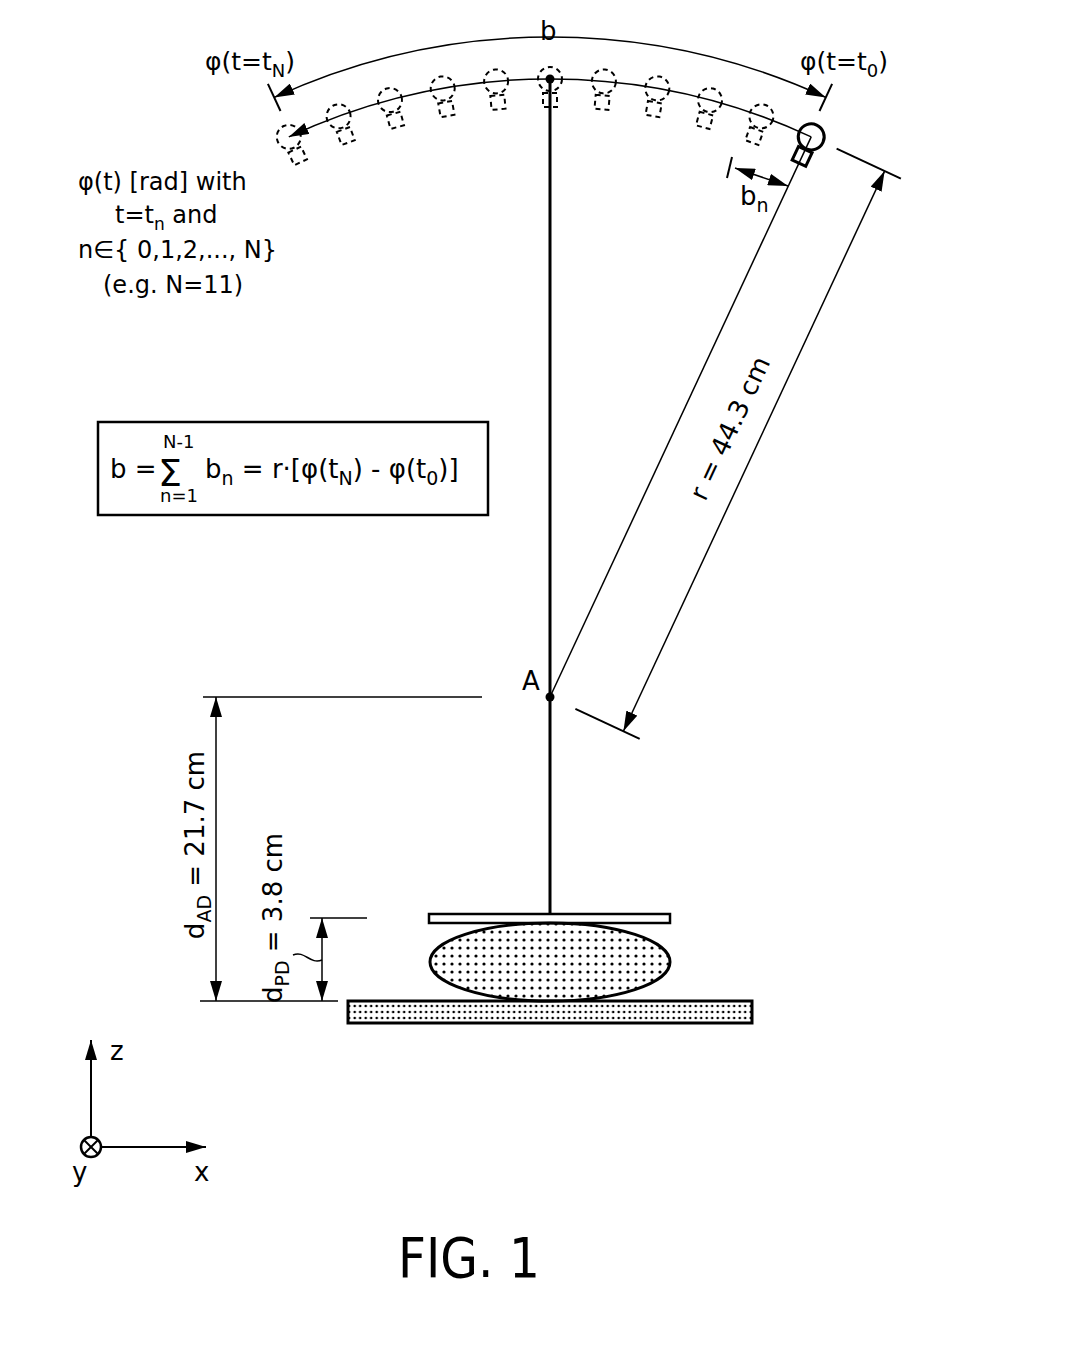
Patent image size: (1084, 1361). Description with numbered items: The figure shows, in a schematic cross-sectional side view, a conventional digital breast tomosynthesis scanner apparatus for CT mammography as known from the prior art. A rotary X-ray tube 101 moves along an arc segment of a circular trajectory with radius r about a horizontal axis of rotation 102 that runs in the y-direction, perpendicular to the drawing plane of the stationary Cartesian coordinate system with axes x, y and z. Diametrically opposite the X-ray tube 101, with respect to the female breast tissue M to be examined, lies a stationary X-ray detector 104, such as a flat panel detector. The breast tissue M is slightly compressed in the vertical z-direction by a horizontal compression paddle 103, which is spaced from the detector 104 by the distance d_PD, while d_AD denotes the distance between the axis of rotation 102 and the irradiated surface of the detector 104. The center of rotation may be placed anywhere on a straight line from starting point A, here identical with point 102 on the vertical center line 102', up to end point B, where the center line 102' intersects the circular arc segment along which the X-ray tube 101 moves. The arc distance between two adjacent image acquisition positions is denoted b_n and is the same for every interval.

The rotary X-ray tube 101 is at (825, 134).
The horizontal axis of rotation 102 is at (525, 730).
The center line 102' is at (597, 496).
The horizontal compression paddle 103 is at (671, 919).
The stationary X-ray detector 104 is at (753, 1012).
The female breast tissue M is at (669, 962).
The end point B is at (553, 83).